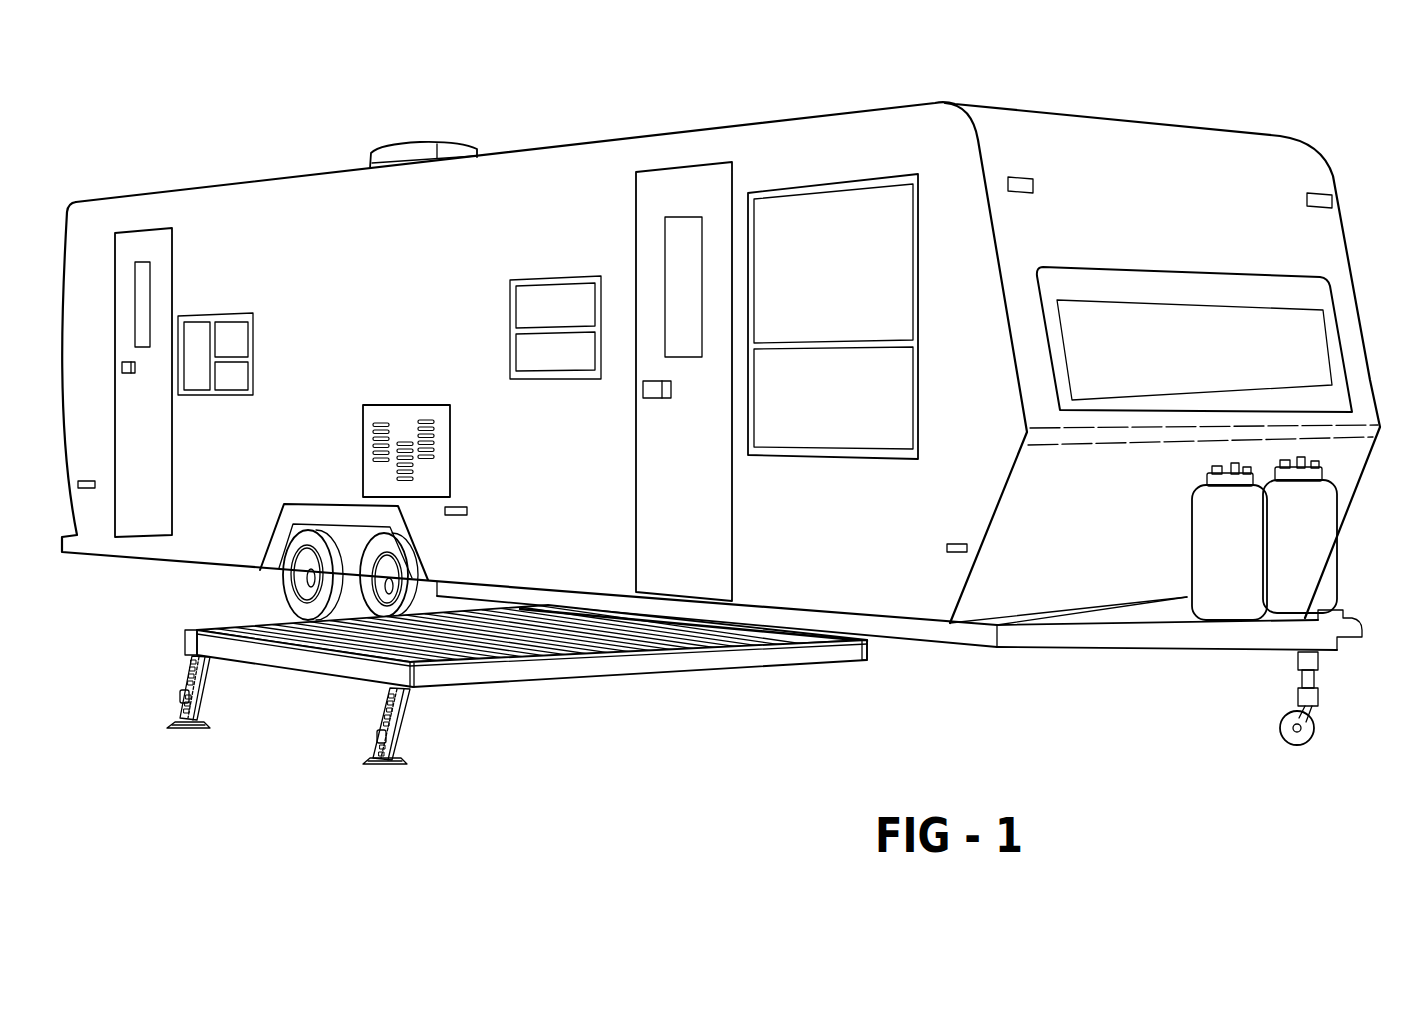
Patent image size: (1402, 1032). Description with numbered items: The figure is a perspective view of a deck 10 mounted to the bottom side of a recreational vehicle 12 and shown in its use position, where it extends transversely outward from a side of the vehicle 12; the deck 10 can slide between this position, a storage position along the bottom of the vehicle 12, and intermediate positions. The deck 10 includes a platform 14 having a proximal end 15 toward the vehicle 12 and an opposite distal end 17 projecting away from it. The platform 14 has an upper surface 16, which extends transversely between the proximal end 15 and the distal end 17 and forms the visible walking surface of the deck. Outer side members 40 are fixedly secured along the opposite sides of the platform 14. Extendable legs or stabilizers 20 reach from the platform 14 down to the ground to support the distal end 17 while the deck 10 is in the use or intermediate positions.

The deck 10 is at (503, 681).
The vehicle 12 is at (721, 423).
The platform 14 is at (542, 660).
The proximal end 15 is at (868, 646).
The upper surface 16 is at (500, 645).
The distal end 17 is at (364, 668).
The stabilizer 20 is at (189, 692).
The outer side members 40 is at (332, 667).